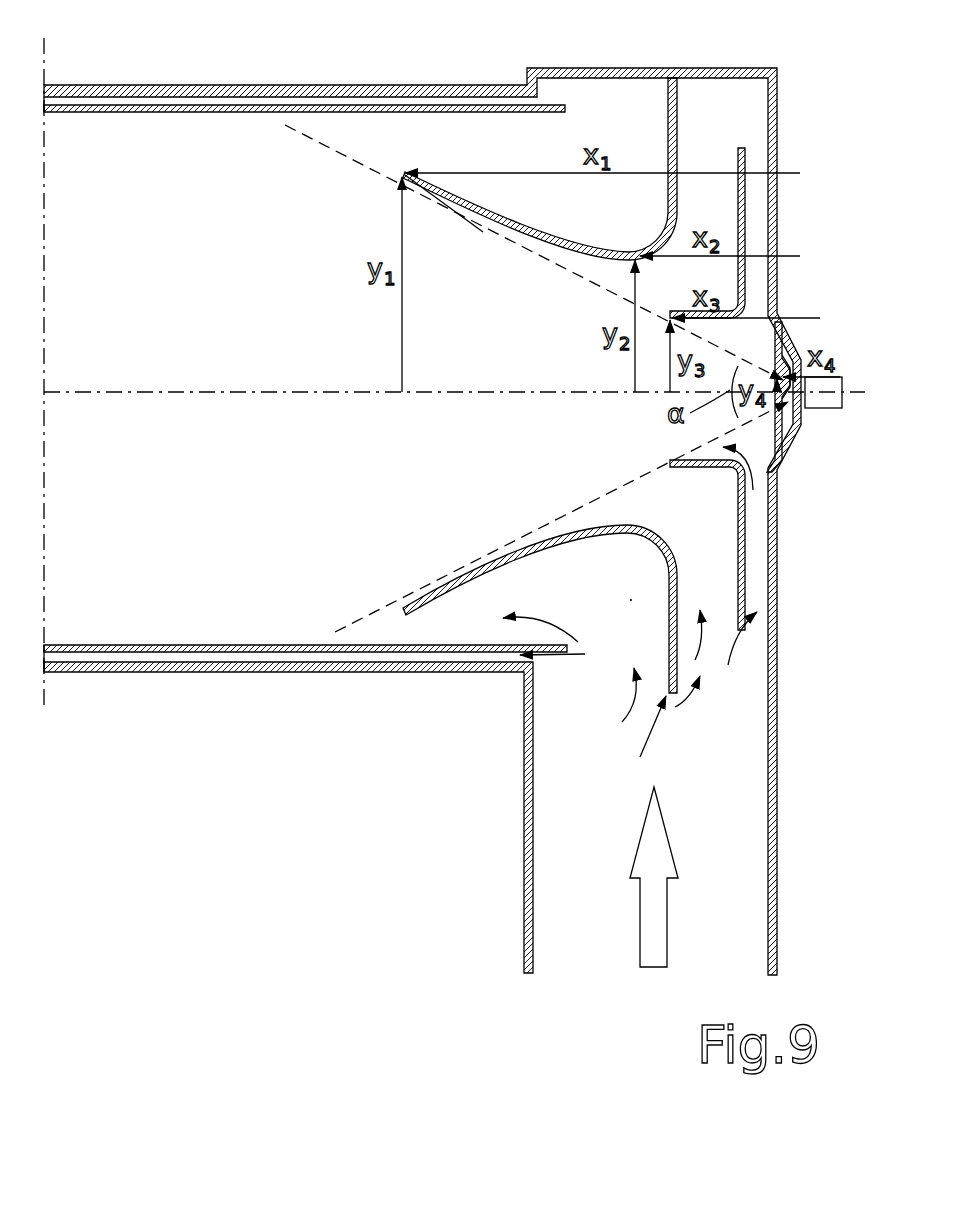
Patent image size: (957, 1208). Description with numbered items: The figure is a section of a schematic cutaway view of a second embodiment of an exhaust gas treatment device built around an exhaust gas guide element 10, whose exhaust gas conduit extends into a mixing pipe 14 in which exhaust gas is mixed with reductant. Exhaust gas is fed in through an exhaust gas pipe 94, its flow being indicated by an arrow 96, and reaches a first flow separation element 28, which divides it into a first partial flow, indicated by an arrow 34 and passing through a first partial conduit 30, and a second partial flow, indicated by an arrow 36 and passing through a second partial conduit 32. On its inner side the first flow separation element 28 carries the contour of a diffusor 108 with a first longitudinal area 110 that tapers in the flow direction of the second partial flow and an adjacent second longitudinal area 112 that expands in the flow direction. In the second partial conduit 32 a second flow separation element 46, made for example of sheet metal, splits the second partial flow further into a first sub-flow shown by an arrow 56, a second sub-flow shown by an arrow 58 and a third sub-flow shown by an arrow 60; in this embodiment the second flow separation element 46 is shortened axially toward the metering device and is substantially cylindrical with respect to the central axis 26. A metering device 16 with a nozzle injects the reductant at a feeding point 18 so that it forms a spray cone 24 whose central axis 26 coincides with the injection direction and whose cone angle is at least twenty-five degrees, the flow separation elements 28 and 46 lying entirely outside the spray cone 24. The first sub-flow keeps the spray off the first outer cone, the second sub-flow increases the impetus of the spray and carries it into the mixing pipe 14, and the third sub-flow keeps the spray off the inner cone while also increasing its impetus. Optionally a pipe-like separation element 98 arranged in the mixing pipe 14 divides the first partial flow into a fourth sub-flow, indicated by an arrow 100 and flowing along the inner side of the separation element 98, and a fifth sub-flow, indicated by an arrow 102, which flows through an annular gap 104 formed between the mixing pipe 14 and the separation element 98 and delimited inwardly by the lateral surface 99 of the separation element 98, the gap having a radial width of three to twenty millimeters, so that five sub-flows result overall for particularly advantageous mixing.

The exhaust gas guide element 10 is at (620, 122).
The mixing pipe 14 is at (355, 90).
The metering device 16 is at (830, 378).
The feeding point 18 is at (785, 368).
The spray cone 24 is at (377, 610).
The central axis 26 is at (477, 392).
The first flow separation element 28 is at (641, 743).
The first partial conduit 30 is at (613, 628).
The second partial conduit 32 is at (757, 705).
The arrow 34 is at (618, 711).
The arrow 36 is at (677, 702).
The second flow separation element 46 is at (752, 287).
The arrow 56 is at (700, 630).
The arrow 58 is at (790, 440).
The arrow 60 is at (730, 467).
The exhaust gas pipe 94 is at (776, 860).
The arrow 96 is at (660, 913).
The separation element 98 is at (430, 645).
The lateral surface 99 is at (222, 658).
The arrow 100 is at (545, 620).
The arrow 102 is at (557, 660).
The annular gap 104 is at (245, 92).
The diffusor 108 is at (552, 272).
The first longitudinal area 110 is at (680, 213).
The second longitudinal area 112 is at (483, 232).